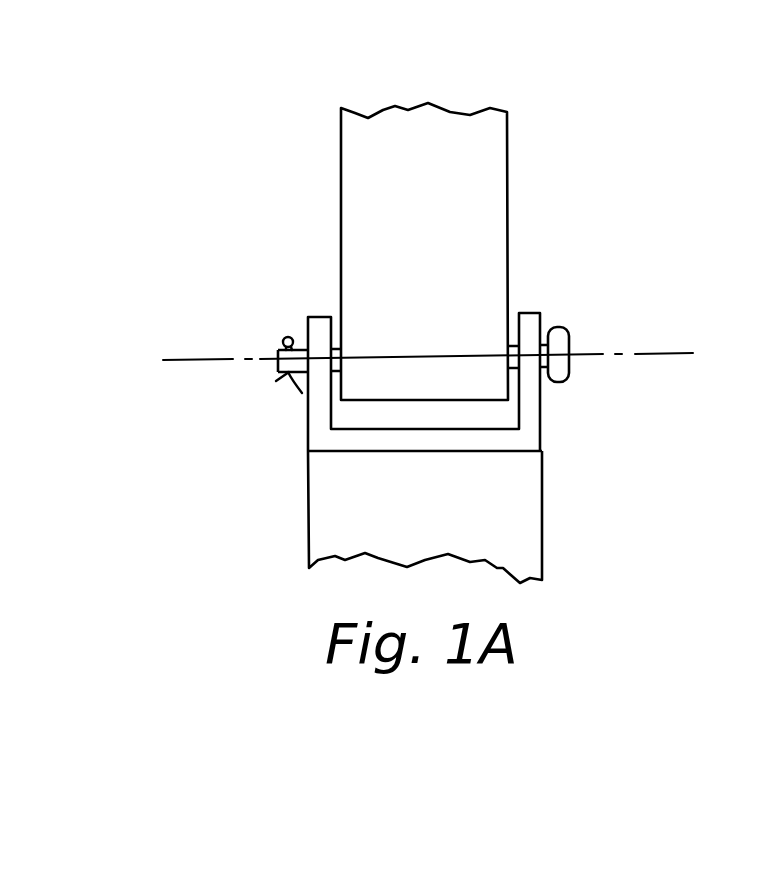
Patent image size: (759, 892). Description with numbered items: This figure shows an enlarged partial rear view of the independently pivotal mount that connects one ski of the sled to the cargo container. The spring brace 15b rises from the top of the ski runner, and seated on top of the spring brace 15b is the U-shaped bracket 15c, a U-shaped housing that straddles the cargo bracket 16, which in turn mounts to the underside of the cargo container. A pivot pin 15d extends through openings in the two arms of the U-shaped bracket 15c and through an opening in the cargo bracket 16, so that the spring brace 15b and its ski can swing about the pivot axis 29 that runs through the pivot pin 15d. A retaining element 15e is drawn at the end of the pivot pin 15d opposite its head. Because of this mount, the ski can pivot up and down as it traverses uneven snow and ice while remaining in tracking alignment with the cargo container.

The cargo bracket 16 is at (458, 222).
The spring brace 15b is at (513, 471).
The U-shaped bracket 15c is at (533, 407).
The pivot pin 15d is at (560, 338).
The cotter pin 15e is at (284, 337).
The pivot axis 29 is at (675, 354).